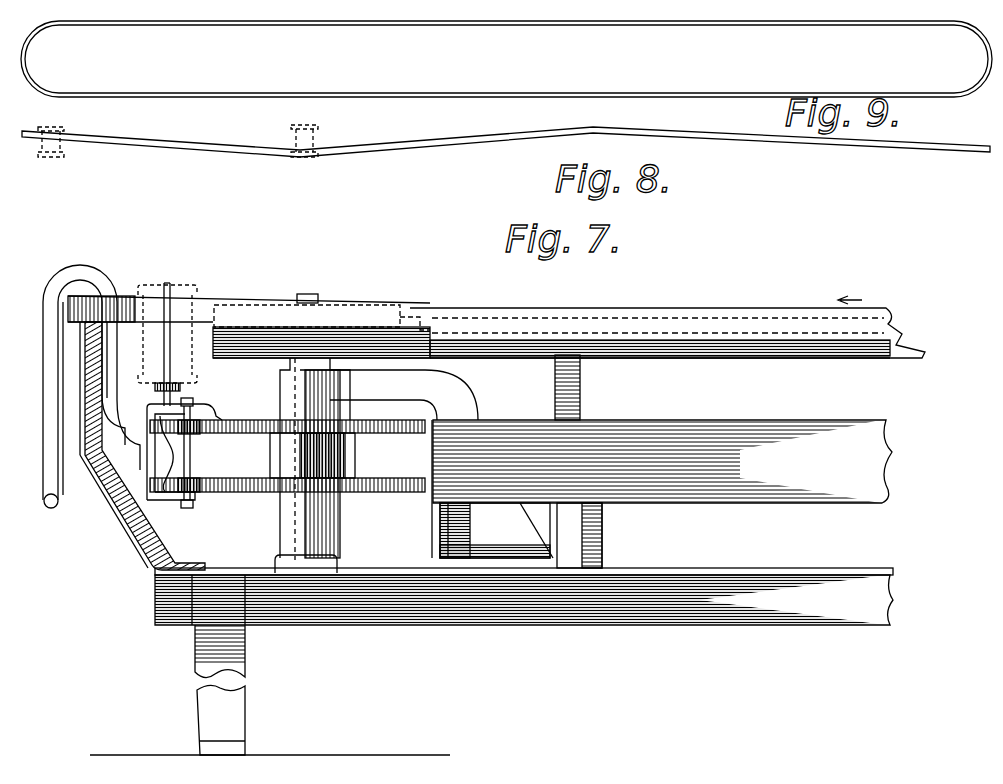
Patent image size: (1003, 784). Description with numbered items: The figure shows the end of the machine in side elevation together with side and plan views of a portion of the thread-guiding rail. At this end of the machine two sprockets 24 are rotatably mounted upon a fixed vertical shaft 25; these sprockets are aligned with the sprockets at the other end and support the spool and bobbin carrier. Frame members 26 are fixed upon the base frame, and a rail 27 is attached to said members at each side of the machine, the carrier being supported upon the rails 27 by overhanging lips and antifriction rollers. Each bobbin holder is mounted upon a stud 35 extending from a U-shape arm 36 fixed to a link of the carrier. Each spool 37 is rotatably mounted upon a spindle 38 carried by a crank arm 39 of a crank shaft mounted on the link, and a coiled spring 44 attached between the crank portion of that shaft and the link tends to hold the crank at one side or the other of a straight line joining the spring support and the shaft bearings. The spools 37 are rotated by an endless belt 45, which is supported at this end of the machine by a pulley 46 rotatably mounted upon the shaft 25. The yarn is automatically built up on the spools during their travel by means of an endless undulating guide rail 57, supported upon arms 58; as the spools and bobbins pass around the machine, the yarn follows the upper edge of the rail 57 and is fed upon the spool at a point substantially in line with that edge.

In FIG. 7, the sprockets 24 is at (407, 434).
In FIG. 7, the fixed vertical shaft 25 is at (309, 295).
In FIG. 7, the frame members 26 is at (602, 541).
In FIG. 7, the rail 27 is at (752, 421).
In FIG. 7, the stud 35 is at (54, 508).
In FIG. 7, the U-shape arm 36 is at (50, 364).
In FIG. 8, the spool 37 is at (62, 152).
In FIG. 7, the spool 37 is at (184, 286).
In FIG. 7, the spindle 38 is at (172, 358).
In FIG. 7, the crank arm 39 is at (181, 388).
In FIG. 7, the coiled spring 44 is at (165, 456).
In FIG. 7, the endless belt 45 is at (741, 308).
In FIG. 7, the pulley 46 is at (365, 312).
In FIG. 9, the guide rail 57 is at (378, 92).
In FIG. 8, the guide rail 57 is at (522, 142).
In FIG. 7, the guide rail 57 is at (260, 312).
In FIG. 7, the arms 58 is at (130, 546).